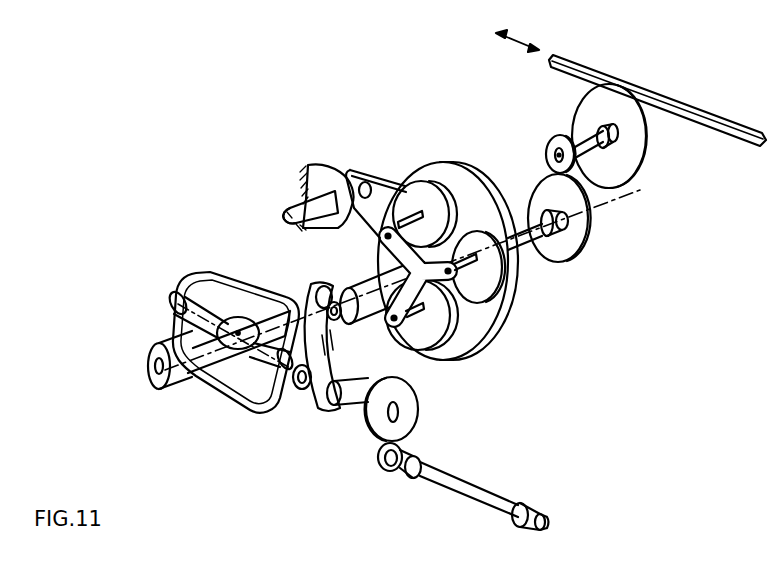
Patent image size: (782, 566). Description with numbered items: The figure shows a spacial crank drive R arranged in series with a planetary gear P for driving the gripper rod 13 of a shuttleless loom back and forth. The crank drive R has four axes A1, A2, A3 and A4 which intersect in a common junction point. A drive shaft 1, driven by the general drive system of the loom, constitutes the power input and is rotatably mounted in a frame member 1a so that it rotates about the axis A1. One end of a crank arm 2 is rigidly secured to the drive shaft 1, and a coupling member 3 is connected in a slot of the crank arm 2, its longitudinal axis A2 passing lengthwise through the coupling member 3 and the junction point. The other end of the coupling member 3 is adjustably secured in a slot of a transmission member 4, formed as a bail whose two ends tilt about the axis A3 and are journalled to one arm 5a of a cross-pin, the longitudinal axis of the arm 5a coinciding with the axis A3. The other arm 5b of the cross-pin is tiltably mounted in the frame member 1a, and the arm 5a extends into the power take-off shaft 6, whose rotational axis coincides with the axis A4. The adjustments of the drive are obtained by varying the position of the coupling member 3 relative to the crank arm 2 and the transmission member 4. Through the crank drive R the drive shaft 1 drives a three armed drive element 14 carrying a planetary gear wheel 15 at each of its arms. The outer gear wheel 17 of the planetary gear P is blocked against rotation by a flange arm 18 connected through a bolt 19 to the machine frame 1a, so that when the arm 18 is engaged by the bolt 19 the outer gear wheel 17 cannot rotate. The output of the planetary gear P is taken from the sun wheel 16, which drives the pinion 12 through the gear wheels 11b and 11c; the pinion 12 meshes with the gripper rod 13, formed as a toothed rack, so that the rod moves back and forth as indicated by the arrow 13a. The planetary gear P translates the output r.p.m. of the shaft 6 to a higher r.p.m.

The drive shaft 1 is at (358, 416).
The frame member 1a is at (321, 173).
The crank arm 2 is at (333, 369).
The coupling member 3 is at (308, 285).
The transmission member 4 is at (233, 281).
The arm of cross-pin 5a is at (181, 294).
The arm of cross-pin 5b is at (216, 378).
The power take-off shaft 6 is at (338, 290).
The gear wheel 11b is at (585, 229).
The gear wheel 11c is at (558, 142).
The pinion 12 is at (633, 142).
The gripper rod 13 is at (661, 95).
The arrow 13a is at (518, 22).
The three armed drive element 14 is at (453, 252).
The planetary gear wheel 15 is at (487, 281).
The sun wheel 16 is at (453, 252).
The outer gear wheel 17 is at (462, 172).
The flange arm 18 is at (374, 172).
The bolt 19 is at (297, 205).
The axis A1 is at (363, 400).
The axis A2 is at (378, 309).
The axis A3 is at (172, 301).
The axis A4 is at (160, 372).
The planetary gear P is at (536, 334).
The spacial crank drive R is at (235, 446).